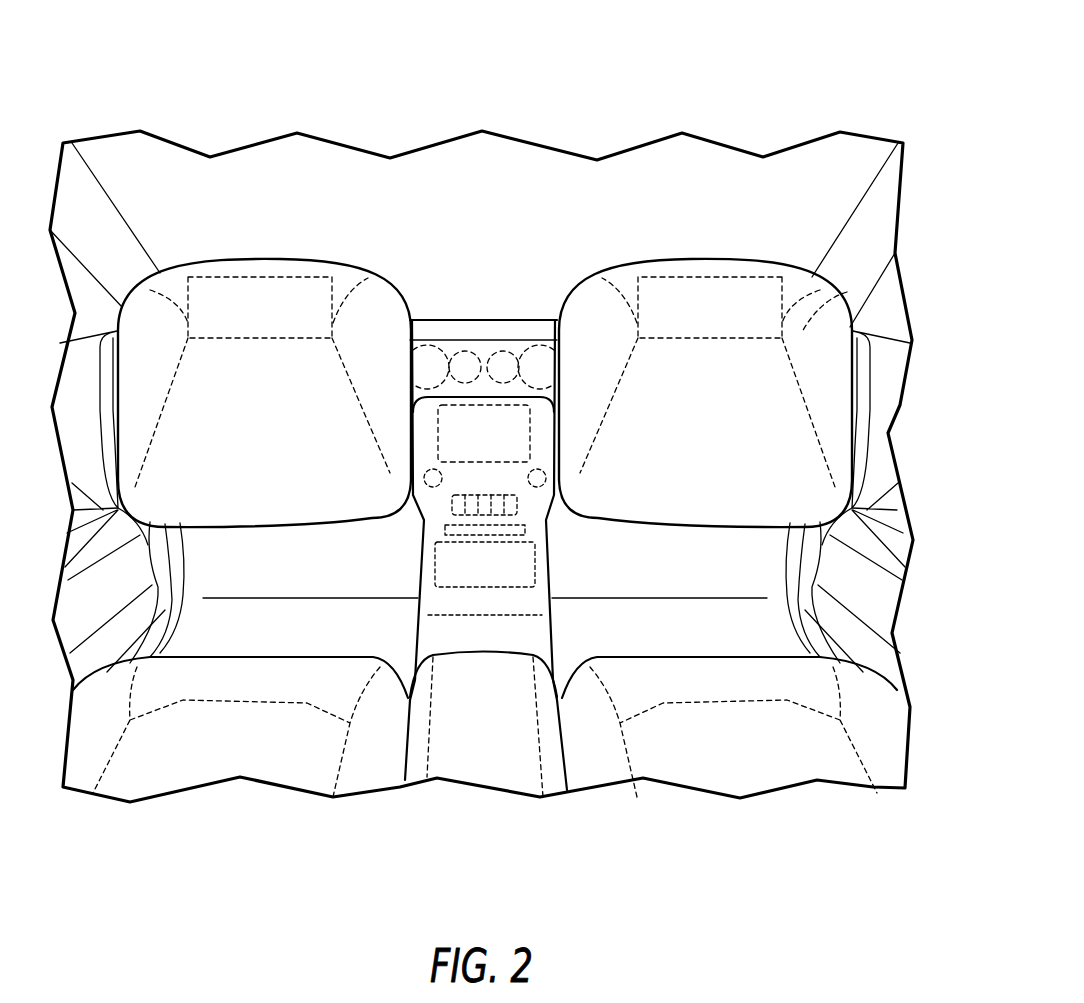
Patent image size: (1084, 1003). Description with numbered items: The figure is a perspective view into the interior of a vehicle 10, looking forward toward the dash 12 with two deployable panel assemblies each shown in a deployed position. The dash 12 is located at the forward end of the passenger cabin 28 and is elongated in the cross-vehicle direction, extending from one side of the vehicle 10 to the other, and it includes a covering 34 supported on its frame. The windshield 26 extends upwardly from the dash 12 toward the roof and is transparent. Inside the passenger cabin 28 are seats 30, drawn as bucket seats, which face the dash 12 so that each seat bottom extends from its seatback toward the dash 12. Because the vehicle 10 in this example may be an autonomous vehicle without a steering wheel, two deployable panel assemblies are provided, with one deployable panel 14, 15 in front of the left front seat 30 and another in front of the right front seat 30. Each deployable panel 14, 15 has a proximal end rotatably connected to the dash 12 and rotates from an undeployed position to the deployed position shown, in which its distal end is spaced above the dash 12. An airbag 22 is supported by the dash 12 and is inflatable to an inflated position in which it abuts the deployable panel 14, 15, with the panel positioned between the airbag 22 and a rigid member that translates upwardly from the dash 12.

The vehicle 10 is at (748, 88).
The dash 12 is at (864, 407).
The deployable panel 14 is at (485, 347).
The deployable panel 15 is at (277, 273).
The airbag 22 is at (268, 532).
The windshield 26 is at (552, 193).
The passenger cabin 28 is at (672, 738).
The seats 30 is at (222, 747).
The covering 34 is at (473, 330).